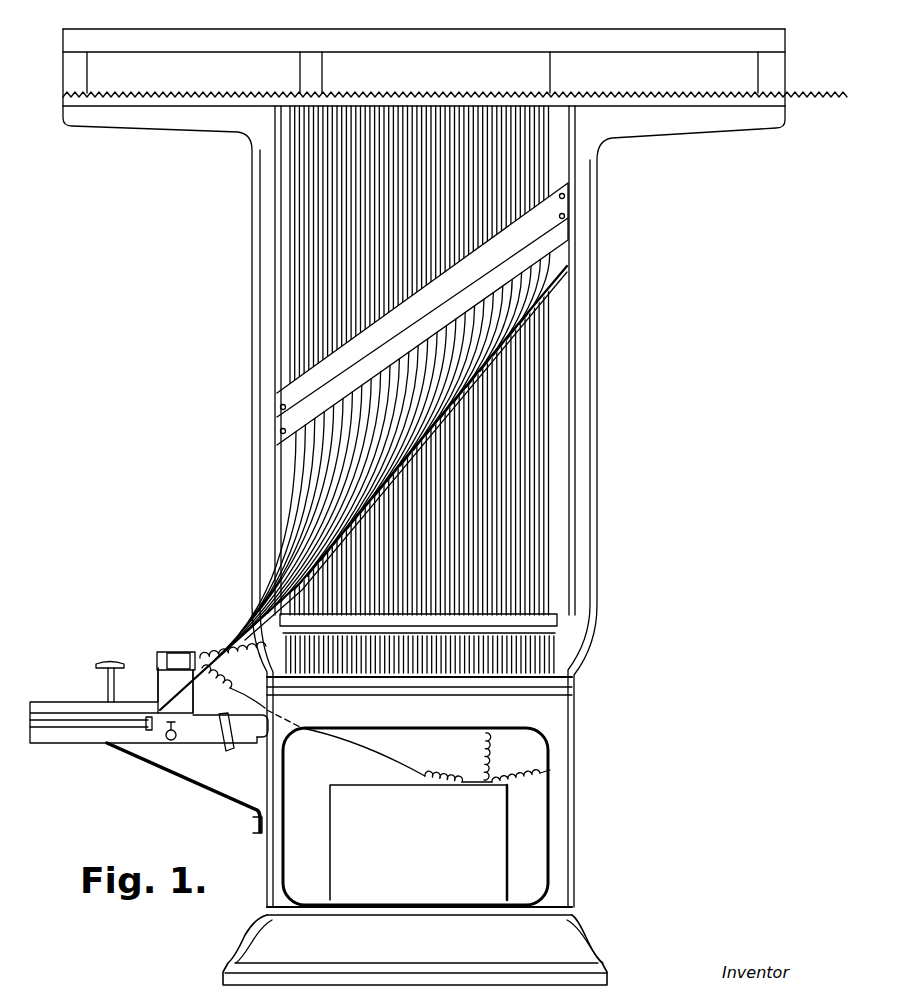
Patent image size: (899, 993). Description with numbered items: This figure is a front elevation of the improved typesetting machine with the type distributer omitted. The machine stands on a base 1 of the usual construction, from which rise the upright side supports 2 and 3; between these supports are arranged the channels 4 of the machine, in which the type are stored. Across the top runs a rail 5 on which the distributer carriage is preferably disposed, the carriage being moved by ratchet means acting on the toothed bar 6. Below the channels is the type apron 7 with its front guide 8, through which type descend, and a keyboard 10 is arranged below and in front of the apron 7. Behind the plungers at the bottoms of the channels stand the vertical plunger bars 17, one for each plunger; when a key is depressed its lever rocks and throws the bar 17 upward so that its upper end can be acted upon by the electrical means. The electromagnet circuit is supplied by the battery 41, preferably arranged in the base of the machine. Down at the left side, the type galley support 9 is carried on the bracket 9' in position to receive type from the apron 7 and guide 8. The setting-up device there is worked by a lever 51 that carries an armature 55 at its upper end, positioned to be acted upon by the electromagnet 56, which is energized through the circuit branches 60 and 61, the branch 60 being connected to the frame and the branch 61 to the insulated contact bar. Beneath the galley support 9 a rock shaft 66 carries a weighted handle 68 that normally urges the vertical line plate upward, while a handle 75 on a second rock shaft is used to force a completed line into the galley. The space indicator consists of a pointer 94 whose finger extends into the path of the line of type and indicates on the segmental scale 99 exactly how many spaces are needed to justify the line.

The base 1 is at (270, 928).
The upright side support 2 is at (587, 430).
The upright side support 3 is at (257, 397).
The channels 4 is at (305, 183).
The rail 5 is at (490, 37).
The toothed bar 6 is at (636, 96).
The type apron 7 is at (325, 478).
The front guide 8 is at (243, 637).
The type galley support 9 is at (149, 722).
The bracket 9' is at (184, 788).
The keyboard 10 is at (580, 652).
The vertical plunger bar 17 is at (528, 505).
The battery 41 is at (492, 835).
The lever 51 is at (152, 664).
The armature 55 is at (168, 644).
The electromagnet 56 is at (183, 652).
The circuit branch 60 is at (350, 748).
The circuit branch 61 is at (212, 650).
The rock shaft 66 is at (97, 727).
The weighted handle 68 is at (167, 740).
The handle 75 is at (226, 748).
The pointer 94 is at (100, 672).
The segmental scale 99 is at (113, 668).